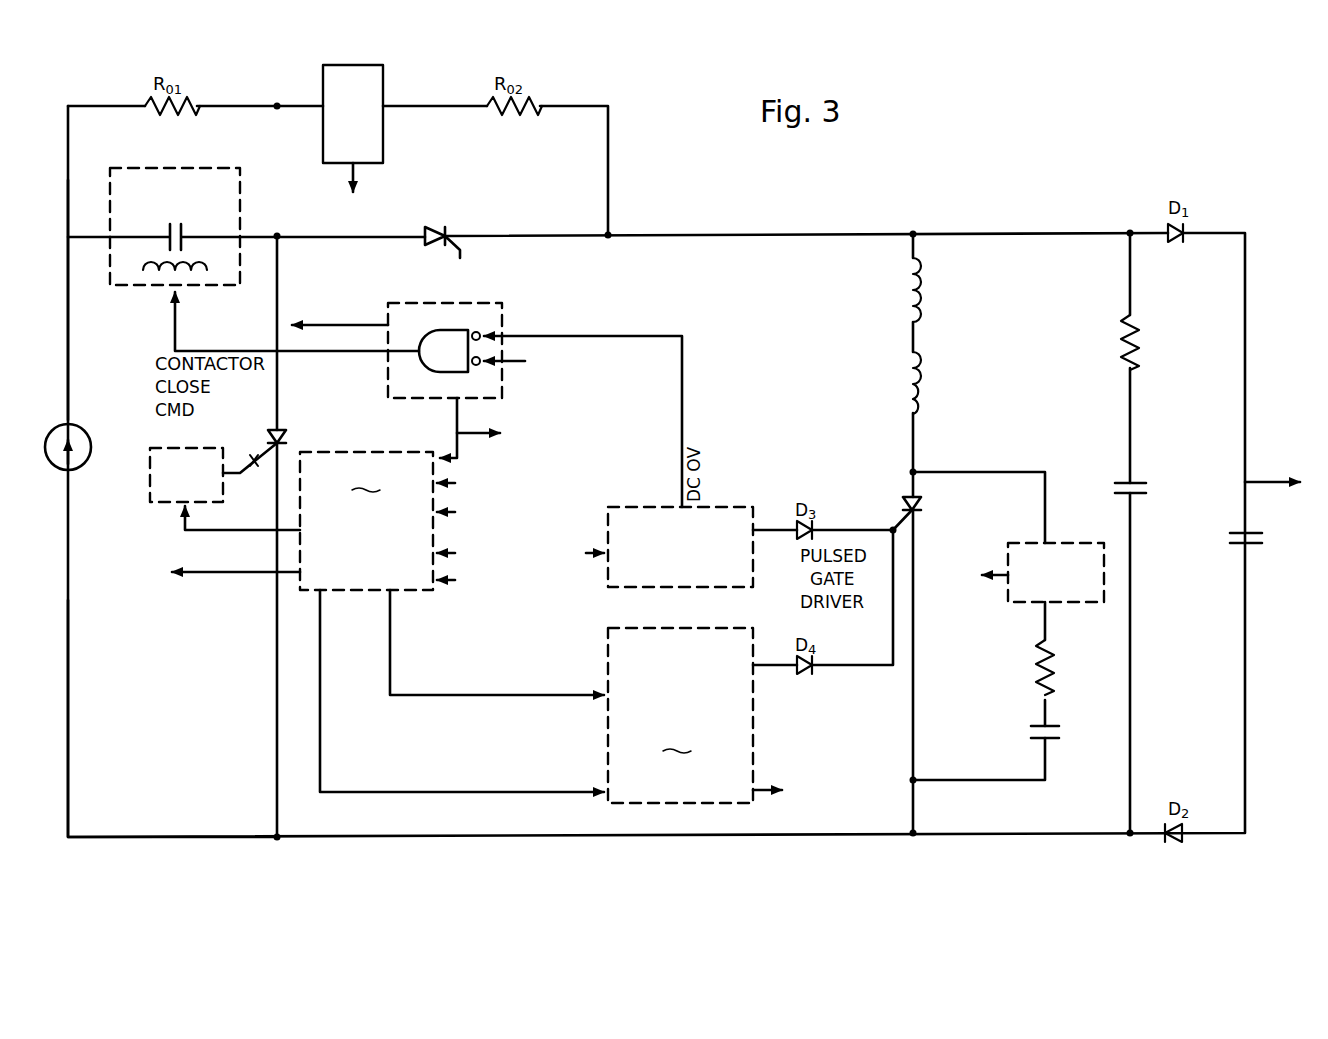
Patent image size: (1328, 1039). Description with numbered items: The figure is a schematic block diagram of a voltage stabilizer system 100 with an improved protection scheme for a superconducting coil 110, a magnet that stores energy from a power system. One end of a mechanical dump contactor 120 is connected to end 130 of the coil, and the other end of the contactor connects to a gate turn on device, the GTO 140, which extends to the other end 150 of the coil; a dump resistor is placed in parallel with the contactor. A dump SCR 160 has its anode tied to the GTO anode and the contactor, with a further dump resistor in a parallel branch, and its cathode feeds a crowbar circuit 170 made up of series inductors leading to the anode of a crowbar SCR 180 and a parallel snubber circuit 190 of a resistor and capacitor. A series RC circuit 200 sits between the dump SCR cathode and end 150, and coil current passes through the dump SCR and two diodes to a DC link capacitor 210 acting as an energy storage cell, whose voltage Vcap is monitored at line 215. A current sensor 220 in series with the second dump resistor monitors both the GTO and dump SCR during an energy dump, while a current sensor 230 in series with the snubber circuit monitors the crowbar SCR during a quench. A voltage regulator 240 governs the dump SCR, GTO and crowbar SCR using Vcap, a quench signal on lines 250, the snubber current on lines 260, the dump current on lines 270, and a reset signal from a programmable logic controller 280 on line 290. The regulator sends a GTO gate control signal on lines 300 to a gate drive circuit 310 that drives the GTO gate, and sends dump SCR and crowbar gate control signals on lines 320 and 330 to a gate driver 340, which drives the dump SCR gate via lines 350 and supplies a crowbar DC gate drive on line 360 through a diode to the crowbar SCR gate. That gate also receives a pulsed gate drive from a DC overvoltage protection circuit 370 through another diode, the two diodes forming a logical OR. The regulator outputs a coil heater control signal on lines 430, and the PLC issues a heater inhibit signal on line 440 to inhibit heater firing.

The voltage stabilizer system 100 is at (968, 138).
The superconducting coil 110 is at (72, 426).
The mechanical dump contactor 120 is at (150, 168).
The end of coil 130 is at (70, 345).
The gate turn on device (GTO) 140 is at (262, 440).
The other end of coil 150 is at (70, 757).
The dump silicon controlled rectifier (SCR) 160 is at (455, 234).
The crowbar circuit 170 is at (990, 438).
The crowbar SCR 180 is at (907, 494).
The snubber circuit 190 is at (1005, 690).
The series connected RC circuit 200 is at (1155, 446).
The DC link capacitor 210 is at (1258, 548).
The line 215 is at (452, 516).
The current sensor 220 is at (383, 92).
The current sensor 230 is at (1062, 543).
The voltage regulator 240 is at (366, 521).
The lines 250 is at (528, 363).
The lines 260 is at (452, 548).
The lines 270 is at (360, 183).
The programmable logic controller (PLC) 280 is at (508, 316).
The line 290 is at (457, 412).
The lines 300 is at (183, 522).
The gate drive circuit 310 is at (172, 504).
The line 320 is at (348, 794).
The line 330 is at (408, 697).
The gate driver 340 is at (680, 715).
The lines 350 is at (762, 794).
The line 360 is at (768, 664).
The DC overvoltage protection circuit 370 is at (742, 512).
The lines 430 is at (200, 573).
The line 440 is at (370, 326).